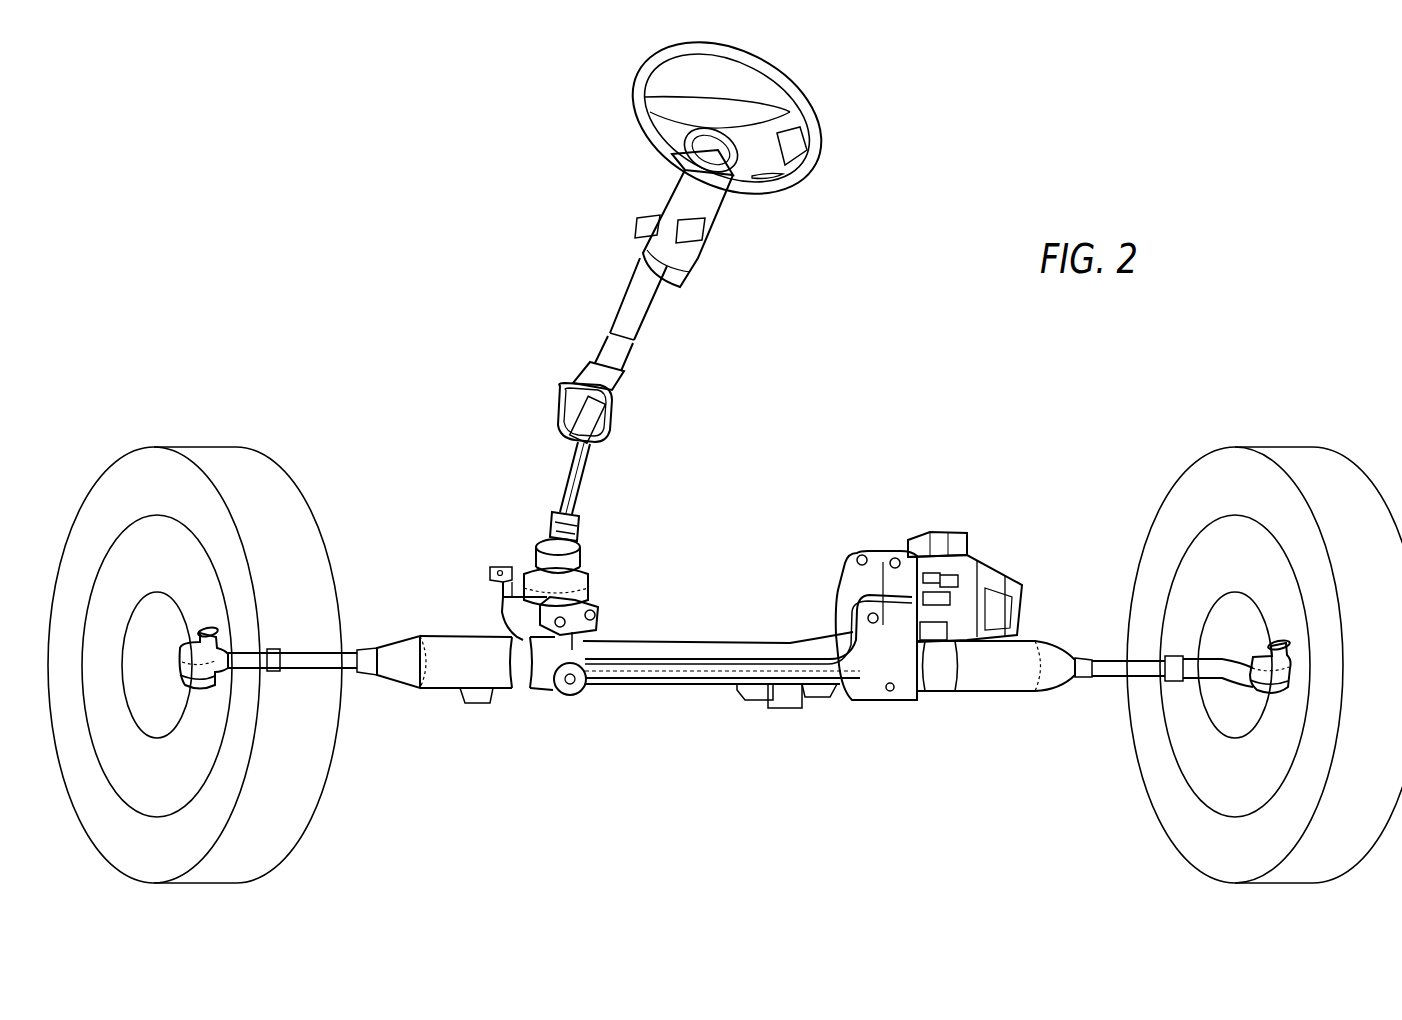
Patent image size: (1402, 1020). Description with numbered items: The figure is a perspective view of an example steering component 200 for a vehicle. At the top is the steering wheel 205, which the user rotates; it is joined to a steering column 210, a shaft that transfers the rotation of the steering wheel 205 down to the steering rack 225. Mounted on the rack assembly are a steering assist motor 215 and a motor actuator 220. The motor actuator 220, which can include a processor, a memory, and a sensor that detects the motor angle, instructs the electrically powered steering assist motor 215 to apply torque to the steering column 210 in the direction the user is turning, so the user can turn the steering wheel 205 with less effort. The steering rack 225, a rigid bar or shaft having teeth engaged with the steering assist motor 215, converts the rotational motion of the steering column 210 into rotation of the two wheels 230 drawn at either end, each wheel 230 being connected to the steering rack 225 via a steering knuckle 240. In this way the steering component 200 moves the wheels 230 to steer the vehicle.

The steering component 200 is at (298, 154).
The steering wheel 205 is at (807, 98).
The steering column 210 is at (640, 307).
The steering assist motor 215 is at (588, 590).
The motor actuator 220 is at (973, 557).
The steering rack 225 is at (458, 643).
The wheels 230 is at (294, 749).
The steering knuckle 240 is at (208, 628).